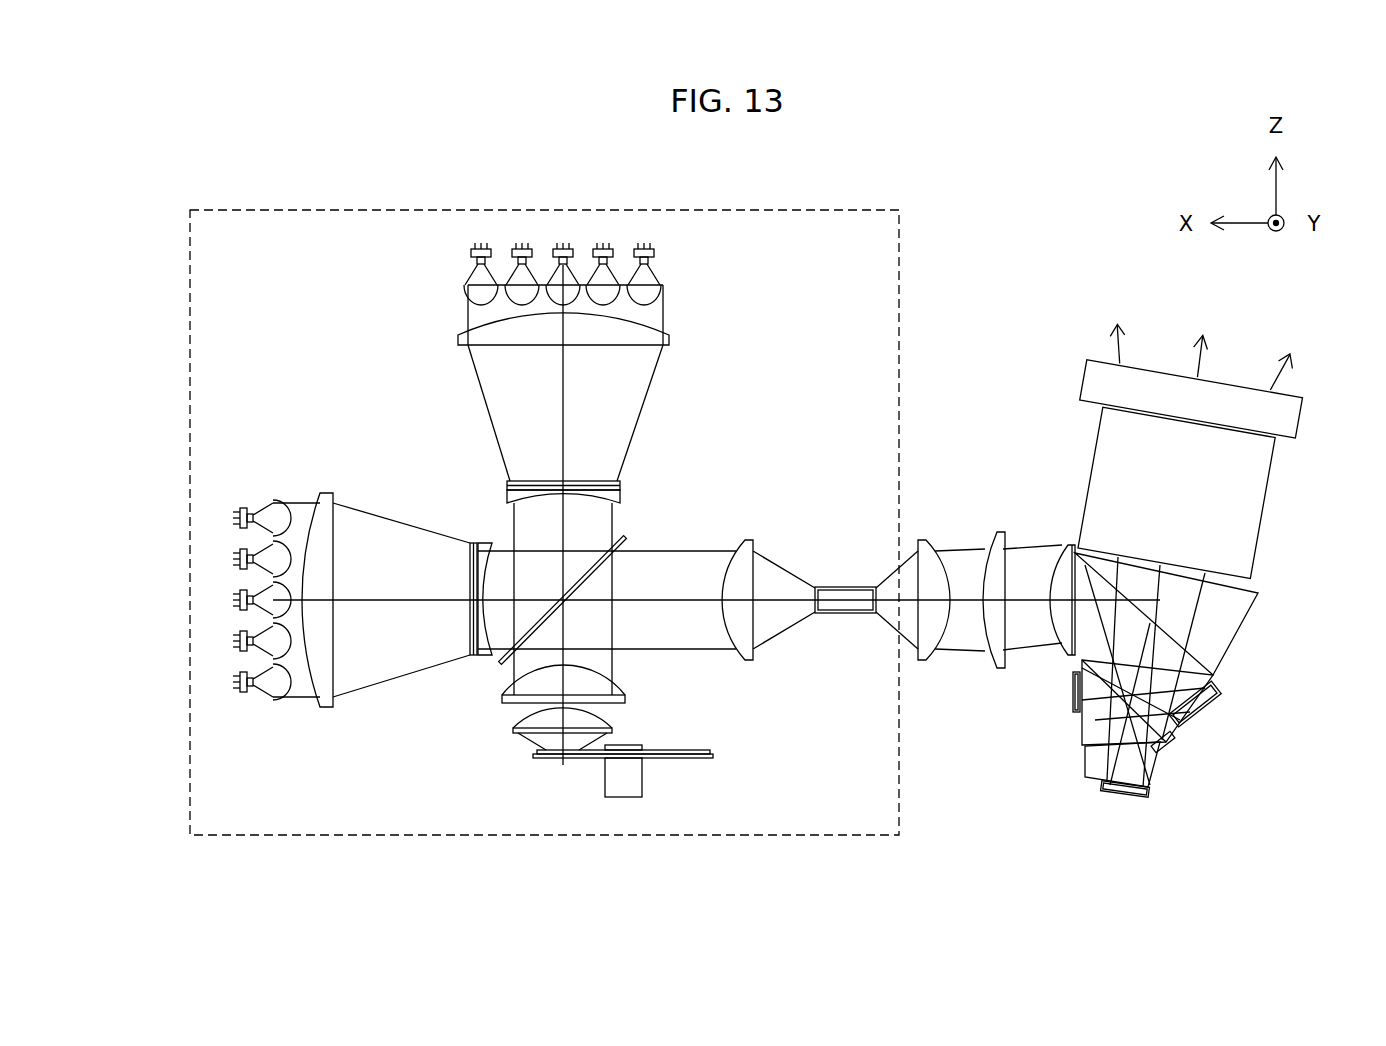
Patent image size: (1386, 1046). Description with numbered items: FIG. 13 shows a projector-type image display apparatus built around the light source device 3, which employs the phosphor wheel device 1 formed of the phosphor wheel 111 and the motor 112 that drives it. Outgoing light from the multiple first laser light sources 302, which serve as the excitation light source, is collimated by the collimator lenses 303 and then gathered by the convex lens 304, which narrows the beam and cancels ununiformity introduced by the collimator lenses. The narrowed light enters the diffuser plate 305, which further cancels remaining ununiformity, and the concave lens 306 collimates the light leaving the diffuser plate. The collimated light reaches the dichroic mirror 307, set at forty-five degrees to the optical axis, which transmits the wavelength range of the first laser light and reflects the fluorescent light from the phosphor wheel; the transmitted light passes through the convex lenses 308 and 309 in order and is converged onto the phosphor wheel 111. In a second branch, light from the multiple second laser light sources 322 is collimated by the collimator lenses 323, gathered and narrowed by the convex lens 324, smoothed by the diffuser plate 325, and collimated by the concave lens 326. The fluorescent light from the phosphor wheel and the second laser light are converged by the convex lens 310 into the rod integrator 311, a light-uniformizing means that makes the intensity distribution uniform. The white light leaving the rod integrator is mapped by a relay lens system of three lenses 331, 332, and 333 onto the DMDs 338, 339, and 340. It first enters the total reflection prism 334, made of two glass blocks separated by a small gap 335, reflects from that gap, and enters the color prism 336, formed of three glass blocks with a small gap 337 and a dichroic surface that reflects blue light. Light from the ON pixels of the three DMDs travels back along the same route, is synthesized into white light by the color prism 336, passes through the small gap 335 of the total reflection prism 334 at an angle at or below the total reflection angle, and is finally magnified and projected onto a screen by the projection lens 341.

The phosphor wheel device 1 is at (673, 733).
The light source device 3 is at (183, 262).
The phosphor wheel 111 is at (703, 760).
The motor 112 is at (643, 778).
The first laser light source 302 is at (470, 253).
The collimator lens 303 is at (464, 287).
The convex lens 304 is at (458, 341).
The diffuser plate 305 is at (508, 481).
The concave lens 306 is at (507, 494).
The dichroic mirror 307 is at (499, 664).
The convex lens 308 is at (506, 704).
The convex lens 309 is at (519, 734).
The convex lens 310 is at (752, 540).
The rod integrator 311 is at (848, 614).
The second laser light source 322 is at (240, 508).
The collimator lens 323 is at (273, 702).
The convex lens 324 is at (318, 709).
The diffuser plate 325 is at (471, 656).
The concave lens 326 is at (482, 657).
The lens 331 is at (922, 540).
The lens 332 is at (996, 667).
The lens 333 is at (1066, 546).
The total reflection prism 334 is at (1258, 593).
The small gap 335 is at (1195, 657).
The color prism 336 is at (1084, 758).
The small gap 337 is at (1172, 742).
The DMD 338 is at (1218, 703).
The DMD 339 is at (1071, 702).
The DMD 340 is at (1123, 800).
The projection lens 341 is at (1093, 462).